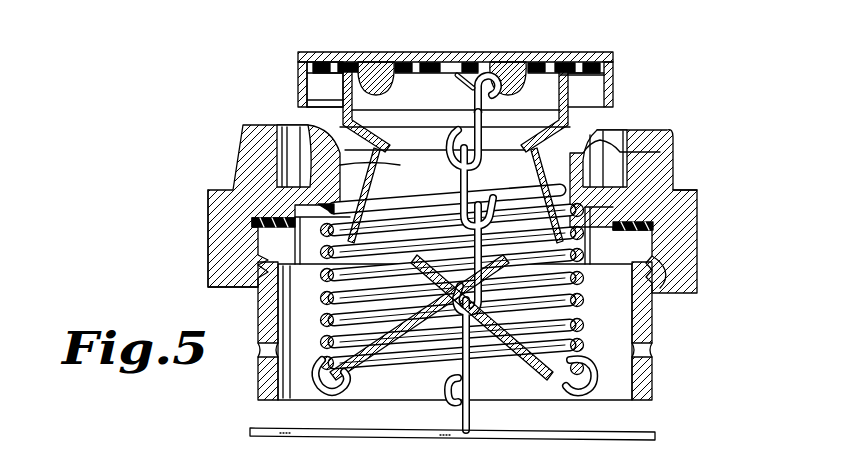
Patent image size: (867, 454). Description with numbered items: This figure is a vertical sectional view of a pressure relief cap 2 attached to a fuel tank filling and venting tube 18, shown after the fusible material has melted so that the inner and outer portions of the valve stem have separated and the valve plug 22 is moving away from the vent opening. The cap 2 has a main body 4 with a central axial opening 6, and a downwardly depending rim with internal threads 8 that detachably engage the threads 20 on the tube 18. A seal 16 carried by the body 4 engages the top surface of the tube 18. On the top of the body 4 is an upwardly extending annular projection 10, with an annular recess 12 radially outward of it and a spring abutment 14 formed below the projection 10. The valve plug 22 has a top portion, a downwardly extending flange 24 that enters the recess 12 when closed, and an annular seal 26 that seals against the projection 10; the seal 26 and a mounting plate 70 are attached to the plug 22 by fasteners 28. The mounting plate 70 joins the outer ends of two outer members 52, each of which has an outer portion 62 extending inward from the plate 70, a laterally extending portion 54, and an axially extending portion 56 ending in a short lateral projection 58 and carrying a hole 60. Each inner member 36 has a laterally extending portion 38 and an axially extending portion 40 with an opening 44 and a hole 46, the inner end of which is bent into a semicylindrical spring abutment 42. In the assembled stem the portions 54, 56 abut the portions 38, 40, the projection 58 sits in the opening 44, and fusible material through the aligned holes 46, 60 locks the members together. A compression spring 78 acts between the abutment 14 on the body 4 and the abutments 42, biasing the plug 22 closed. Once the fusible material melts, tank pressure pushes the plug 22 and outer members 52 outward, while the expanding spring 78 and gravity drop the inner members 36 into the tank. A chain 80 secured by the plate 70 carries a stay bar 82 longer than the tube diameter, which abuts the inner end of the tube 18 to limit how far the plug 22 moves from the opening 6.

The cap 2 is at (686, 152).
The main body 4 is at (697, 232).
The central axial opening 6 is at (600, 140).
The internal threads 8 is at (280, 268).
The annular projection 10 is at (300, 130).
The annular recess 12 is at (676, 182).
The spring abutment 14 is at (240, 195).
The seal 16 is at (697, 243).
The tank filling and venting tube 18 is at (670, 360).
The threads 20 is at (680, 268).
The valve plug 22 is at (588, 52).
The flange 24 is at (612, 70).
The annular seal 26 is at (507, 62).
The fasteners 28 is at (374, 62).
The inner member 36 is at (345, 372).
The laterally extending portion 38 is at (585, 278).
The axially inwardly extending portion 40 is at (585, 318).
The spring abutment 42 is at (585, 385).
The opening 44 is at (400, 400).
The hole 46 is at (382, 305).
The outer member 52 is at (360, 120).
The laterally extending portion 54 is at (474, 90).
The axially inwardly extending portion 56 is at (372, 160).
The lateral projection 58 is at (330, 250).
The hole 60 is at (360, 185).
The outer portion 62 is at (300, 86).
The mounting plate 70 is at (412, 62).
The compression spring 78 is at (325, 375).
The chain 80 is at (445, 385).
The stay bar 82 is at (655, 434).